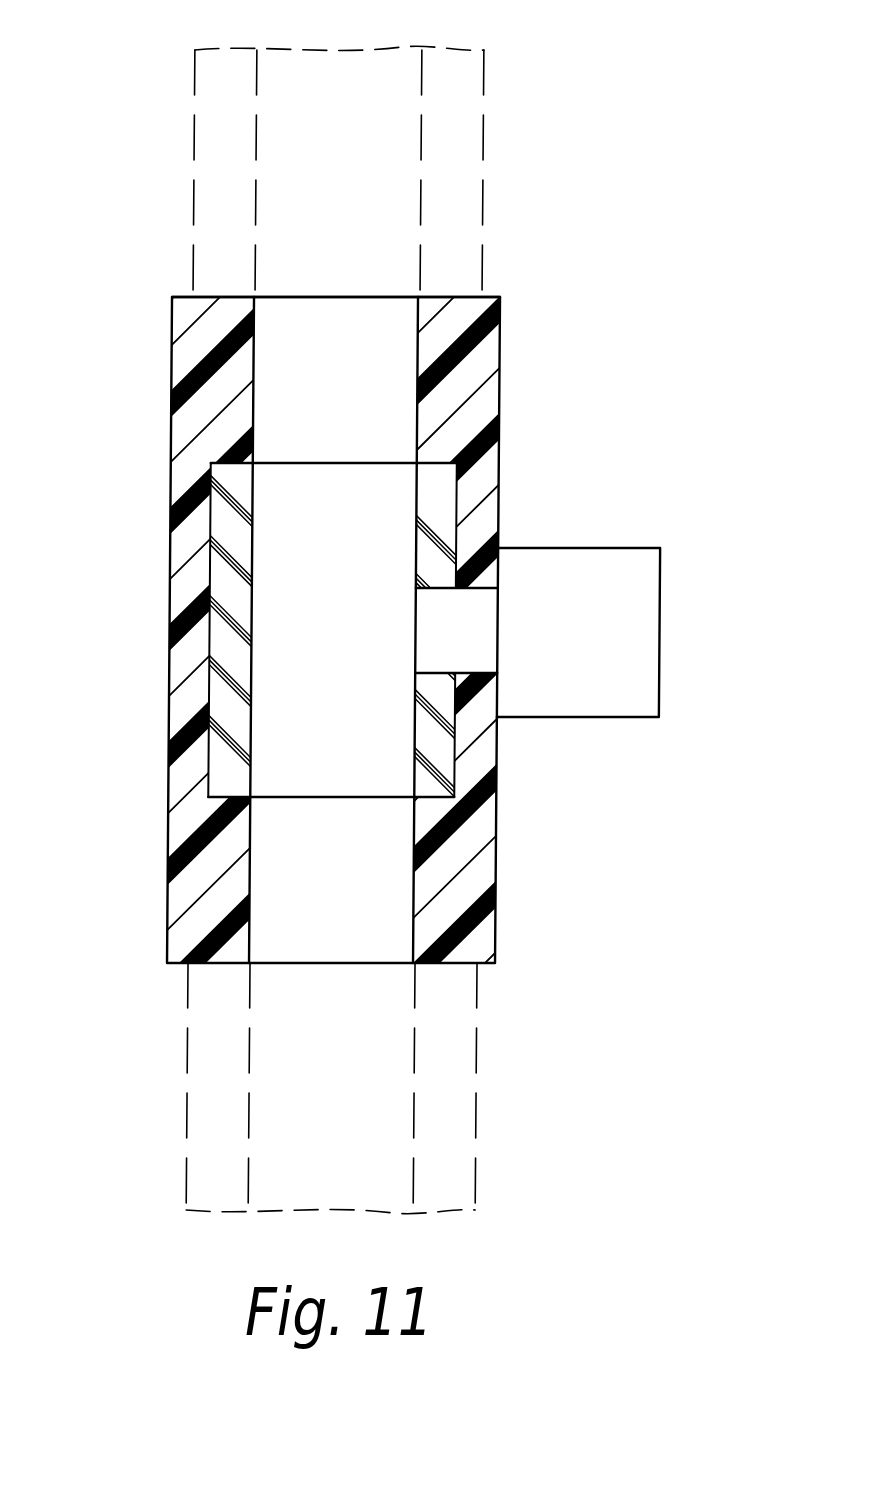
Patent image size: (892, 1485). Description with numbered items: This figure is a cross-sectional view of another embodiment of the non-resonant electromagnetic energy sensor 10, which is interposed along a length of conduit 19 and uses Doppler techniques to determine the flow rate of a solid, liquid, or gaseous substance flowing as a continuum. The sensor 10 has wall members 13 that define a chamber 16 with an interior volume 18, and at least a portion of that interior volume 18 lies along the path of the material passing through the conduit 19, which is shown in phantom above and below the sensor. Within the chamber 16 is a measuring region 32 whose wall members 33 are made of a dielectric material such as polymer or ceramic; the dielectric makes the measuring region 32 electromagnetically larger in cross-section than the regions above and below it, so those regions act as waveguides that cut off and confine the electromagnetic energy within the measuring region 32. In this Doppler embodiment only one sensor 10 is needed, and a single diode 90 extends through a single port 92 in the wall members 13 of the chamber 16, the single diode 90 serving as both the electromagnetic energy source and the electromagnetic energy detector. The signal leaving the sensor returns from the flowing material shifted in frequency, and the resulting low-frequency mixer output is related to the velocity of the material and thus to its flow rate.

The non-resonant electromagnetic energy sensor 10 is at (645, 418).
The wall members 13 is at (183, 888).
The chamber 16 is at (397, 312).
The interior volume 18 is at (352, 376).
The conduit 19 is at (462, 121).
The measuring region 32 is at (388, 523).
The wall members of the measuring region 33 is at (222, 533).
The single diode 90 is at (638, 597).
The single port 92 is at (490, 653).